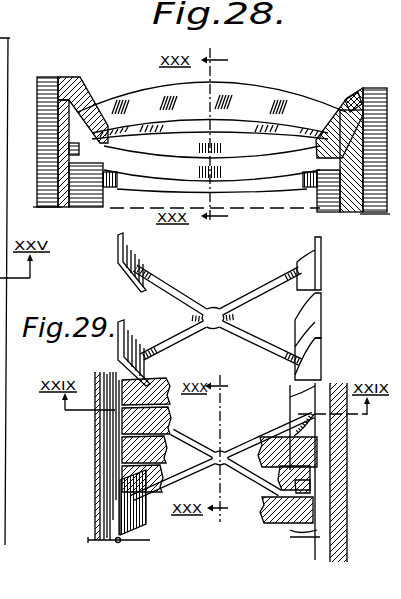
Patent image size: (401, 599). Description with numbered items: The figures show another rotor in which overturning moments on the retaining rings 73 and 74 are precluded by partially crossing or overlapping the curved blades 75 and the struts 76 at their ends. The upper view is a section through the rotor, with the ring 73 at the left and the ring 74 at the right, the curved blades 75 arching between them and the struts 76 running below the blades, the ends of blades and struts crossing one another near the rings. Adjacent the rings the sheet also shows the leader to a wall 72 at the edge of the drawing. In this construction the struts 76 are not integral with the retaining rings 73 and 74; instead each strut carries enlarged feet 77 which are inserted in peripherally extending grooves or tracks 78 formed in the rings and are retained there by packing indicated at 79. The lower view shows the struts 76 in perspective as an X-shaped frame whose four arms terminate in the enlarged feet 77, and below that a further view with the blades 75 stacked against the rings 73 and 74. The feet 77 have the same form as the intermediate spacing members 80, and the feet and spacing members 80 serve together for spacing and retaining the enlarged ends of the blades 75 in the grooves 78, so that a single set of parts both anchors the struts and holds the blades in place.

In FIG. 28, the frame wall 72 is at (9, 57).
In FIG. 28, the retaining ring 73 is at (72, 100).
In FIG. 29, the retaining ring 73 is at (95, 484).
In FIG. 28, the retaining ring 74 is at (353, 98).
In FIG. 29, the retaining ring 74 is at (343, 477).
In FIG. 28, the curved blade 75 is at (283, 103).
In FIG. 29, the curved blade 75 is at (280, 506).
In FIG. 28, the strut 76 is at (295, 188).
In FIG. 29, the strut 76 is at (247, 296).
In FIG. 28, the enlarged foot 77 is at (333, 130).
In FIG. 29, the enlarged foot 77 is at (321, 263).
In FIG. 28, the groove 78 is at (316, 146).
In FIG. 29, the groove 78 is at (306, 536).
In FIG. 28, the packing 79 is at (352, 110).
In FIG. 29, the intermediate spacing member 80 is at (321, 300).